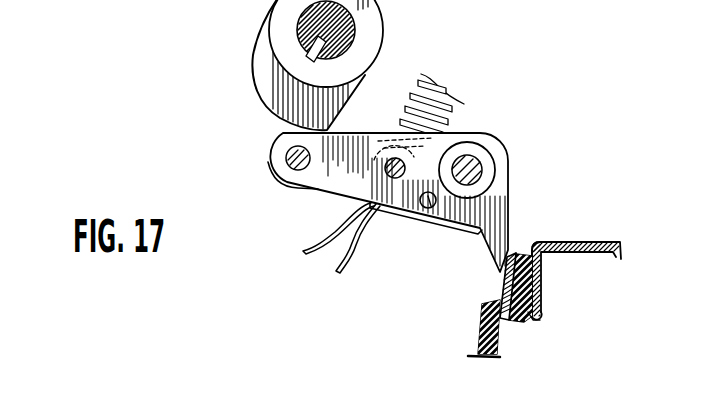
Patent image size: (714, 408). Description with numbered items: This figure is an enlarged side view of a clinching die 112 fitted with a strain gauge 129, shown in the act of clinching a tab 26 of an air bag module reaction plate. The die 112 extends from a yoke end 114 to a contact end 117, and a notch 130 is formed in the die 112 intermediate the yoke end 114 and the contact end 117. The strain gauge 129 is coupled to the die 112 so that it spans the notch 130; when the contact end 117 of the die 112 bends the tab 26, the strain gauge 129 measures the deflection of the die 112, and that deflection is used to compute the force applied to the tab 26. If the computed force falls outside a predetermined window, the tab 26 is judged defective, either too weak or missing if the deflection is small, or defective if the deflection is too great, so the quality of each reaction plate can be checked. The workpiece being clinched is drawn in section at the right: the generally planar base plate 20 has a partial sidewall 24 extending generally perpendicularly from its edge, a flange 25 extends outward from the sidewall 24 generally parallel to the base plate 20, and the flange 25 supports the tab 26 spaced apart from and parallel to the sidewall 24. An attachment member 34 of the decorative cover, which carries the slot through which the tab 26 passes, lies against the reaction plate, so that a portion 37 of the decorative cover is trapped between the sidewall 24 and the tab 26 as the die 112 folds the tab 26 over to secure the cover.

The base plate 20 is at (605, 243).
The partial sidewall 24 is at (540, 281).
The flange 25 is at (540, 318).
The tab 26 is at (509, 270).
The attachment member 34 is at (478, 340).
The portion of decorative cover 37 is at (534, 246).
The die 112 is at (482, 132).
The yoke end 114 is at (277, 172).
The contact end 117 is at (510, 215).
The strain gauge 129 is at (431, 212).
The notch 130 is at (426, 205).